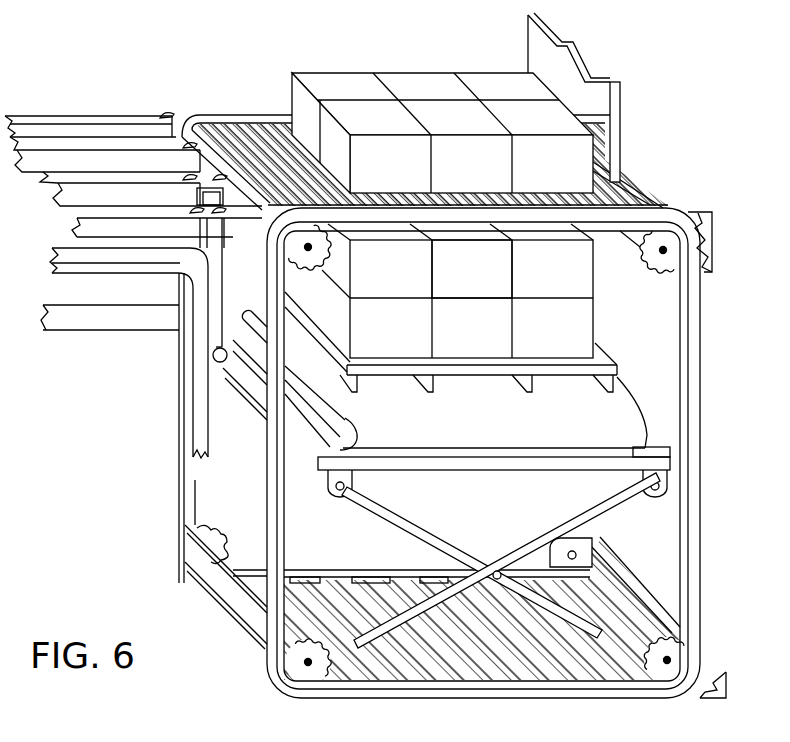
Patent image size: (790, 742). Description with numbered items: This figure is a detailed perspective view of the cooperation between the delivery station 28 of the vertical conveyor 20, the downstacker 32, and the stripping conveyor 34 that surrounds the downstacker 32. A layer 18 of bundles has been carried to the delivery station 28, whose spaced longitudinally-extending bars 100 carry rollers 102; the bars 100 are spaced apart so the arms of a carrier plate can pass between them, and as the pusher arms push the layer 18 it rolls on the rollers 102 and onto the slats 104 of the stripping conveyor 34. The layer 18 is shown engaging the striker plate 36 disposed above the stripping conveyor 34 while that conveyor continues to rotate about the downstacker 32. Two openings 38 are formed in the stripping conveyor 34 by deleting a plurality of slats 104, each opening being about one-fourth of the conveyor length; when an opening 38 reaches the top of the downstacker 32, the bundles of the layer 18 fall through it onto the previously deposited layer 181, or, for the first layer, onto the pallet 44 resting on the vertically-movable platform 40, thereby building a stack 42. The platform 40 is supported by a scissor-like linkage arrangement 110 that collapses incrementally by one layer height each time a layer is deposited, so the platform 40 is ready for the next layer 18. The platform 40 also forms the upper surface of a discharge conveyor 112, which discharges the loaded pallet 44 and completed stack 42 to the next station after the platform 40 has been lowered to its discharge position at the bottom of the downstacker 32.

The layer of bundles 18 is at (406, 73).
The vertical conveyor 20 is at (108, 268).
The delivery station 28 is at (40, 114).
The downstacker 32 is at (637, 175).
The stripping conveyor 34 is at (702, 368).
The striker plate 36 is at (592, 92).
The openings 38 is at (225, 480).
The vertically-movable platform 40 is at (435, 380).
The stack 42 is at (595, 321).
The pallet 44 is at (612, 386).
The longitudinally-extending bars 100 is at (103, 148).
The rollers 102 is at (167, 114).
The slats 104 is at (190, 549).
The scissor-like linkage arrangement 110 is at (466, 549).
The discharge conveyor 112 is at (422, 438).
The box 181 is at (490, 288).